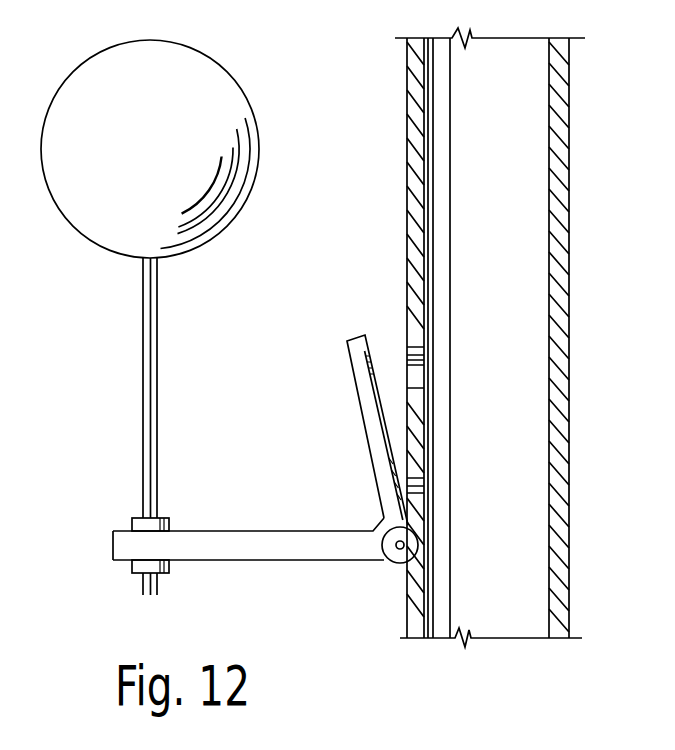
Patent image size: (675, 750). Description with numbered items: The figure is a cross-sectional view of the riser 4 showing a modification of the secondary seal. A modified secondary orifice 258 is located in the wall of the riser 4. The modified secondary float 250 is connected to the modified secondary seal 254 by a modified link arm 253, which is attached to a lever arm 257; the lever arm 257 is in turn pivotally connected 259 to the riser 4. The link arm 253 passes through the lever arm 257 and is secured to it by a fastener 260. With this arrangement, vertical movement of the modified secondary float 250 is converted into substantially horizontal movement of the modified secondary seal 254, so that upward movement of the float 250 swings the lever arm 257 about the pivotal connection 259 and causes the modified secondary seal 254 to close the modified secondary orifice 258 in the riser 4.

The modified secondary float 250 is at (162, 78).
The modified link arm 253 is at (149, 289).
The modified secondary seal 254 is at (382, 400).
The lever arm 257 is at (333, 543).
The modified secondary orifice 258 is at (416, 407).
The pivotal connection 259 is at (399, 551).
The nut 260 is at (160, 575).
The riser 4 is at (557, 185).